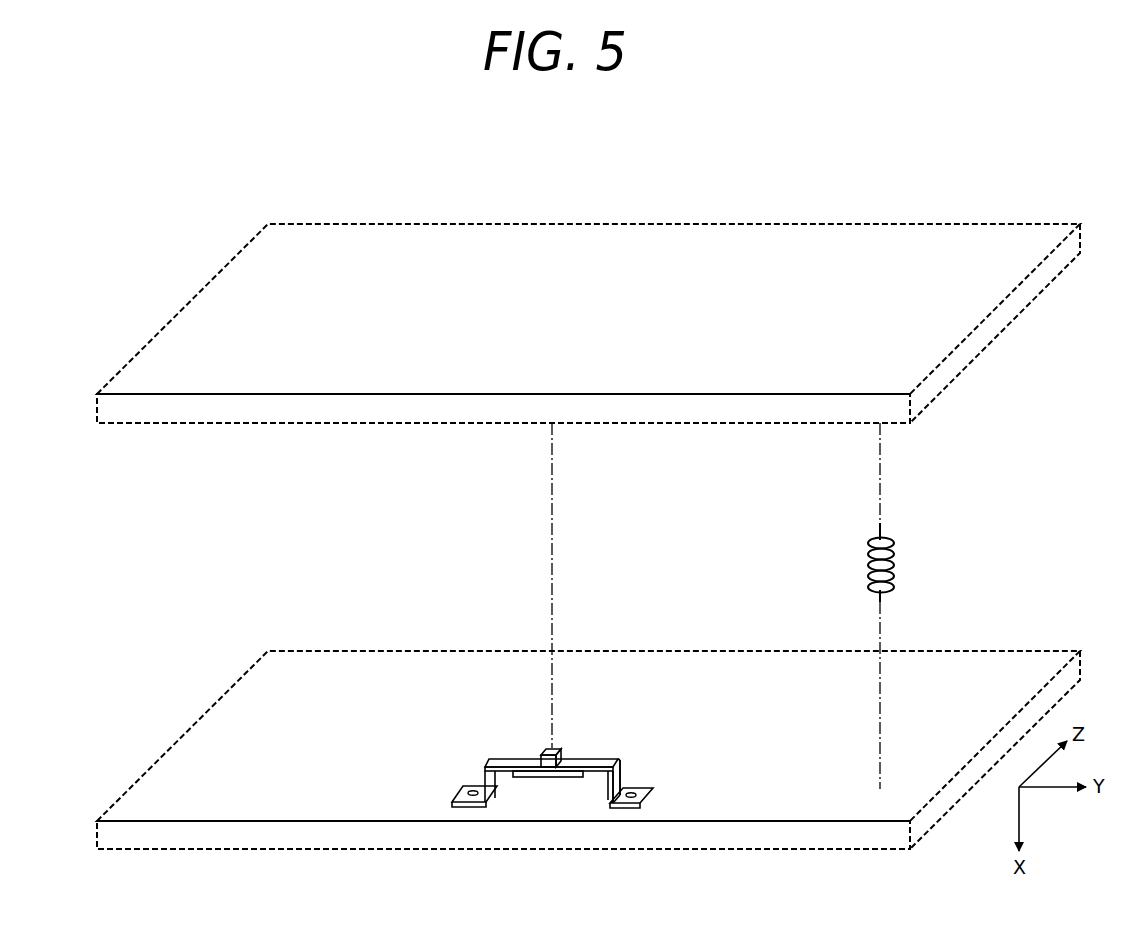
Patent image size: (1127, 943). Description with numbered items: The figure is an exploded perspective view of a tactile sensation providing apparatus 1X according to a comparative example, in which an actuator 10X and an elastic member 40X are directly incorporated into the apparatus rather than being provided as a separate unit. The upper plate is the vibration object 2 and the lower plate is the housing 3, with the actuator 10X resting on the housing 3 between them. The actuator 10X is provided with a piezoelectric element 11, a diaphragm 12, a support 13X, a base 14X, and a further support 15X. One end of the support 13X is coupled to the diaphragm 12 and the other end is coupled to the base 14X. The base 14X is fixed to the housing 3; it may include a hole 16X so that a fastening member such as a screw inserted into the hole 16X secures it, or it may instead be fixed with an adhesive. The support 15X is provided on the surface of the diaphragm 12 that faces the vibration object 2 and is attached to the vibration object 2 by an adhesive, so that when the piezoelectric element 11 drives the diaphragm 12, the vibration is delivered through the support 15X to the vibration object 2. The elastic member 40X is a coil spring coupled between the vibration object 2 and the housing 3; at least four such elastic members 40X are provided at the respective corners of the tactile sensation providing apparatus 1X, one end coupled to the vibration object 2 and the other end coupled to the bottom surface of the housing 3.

The tactile sensation providing apparatus 1X is at (123, 209).
The vibration object 2 is at (157, 323).
The housing 3 is at (156, 751).
The actuator 10X is at (603, 732).
The piezoelectric element 11 is at (530, 775).
The diaphragm 12 is at (598, 767).
The support 13X is at (620, 775).
The base 14X is at (647, 797).
The support 15X is at (540, 752).
The hole 16X is at (630, 797).
The elastic member 40X is at (893, 548).